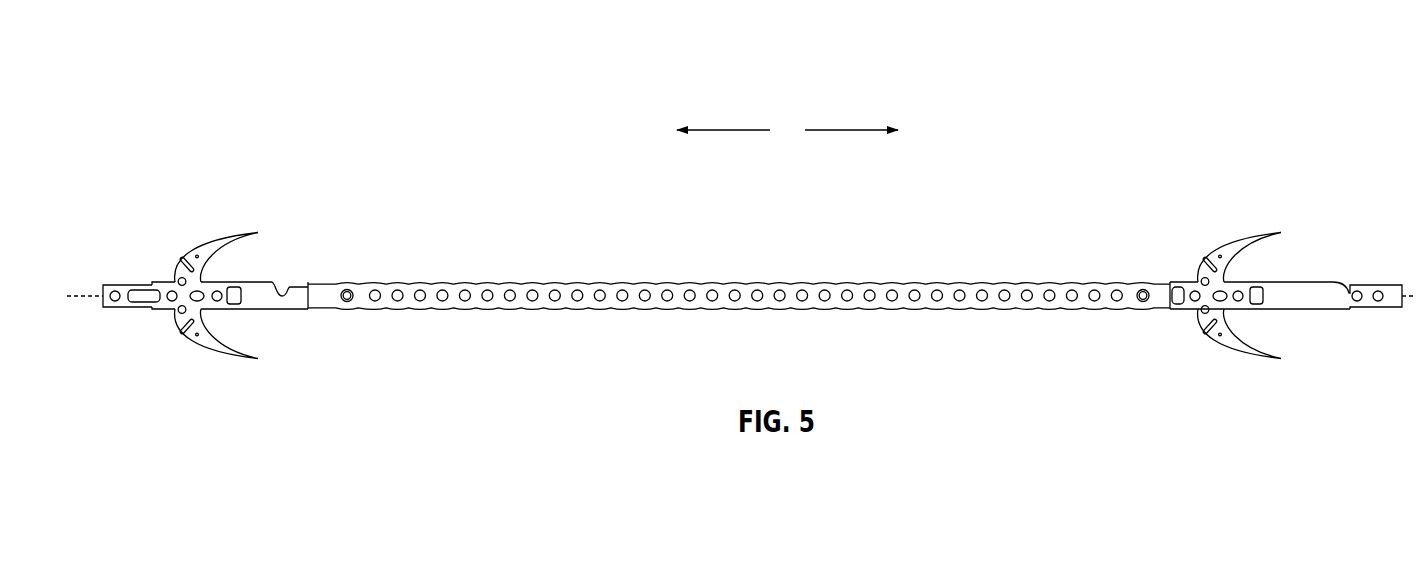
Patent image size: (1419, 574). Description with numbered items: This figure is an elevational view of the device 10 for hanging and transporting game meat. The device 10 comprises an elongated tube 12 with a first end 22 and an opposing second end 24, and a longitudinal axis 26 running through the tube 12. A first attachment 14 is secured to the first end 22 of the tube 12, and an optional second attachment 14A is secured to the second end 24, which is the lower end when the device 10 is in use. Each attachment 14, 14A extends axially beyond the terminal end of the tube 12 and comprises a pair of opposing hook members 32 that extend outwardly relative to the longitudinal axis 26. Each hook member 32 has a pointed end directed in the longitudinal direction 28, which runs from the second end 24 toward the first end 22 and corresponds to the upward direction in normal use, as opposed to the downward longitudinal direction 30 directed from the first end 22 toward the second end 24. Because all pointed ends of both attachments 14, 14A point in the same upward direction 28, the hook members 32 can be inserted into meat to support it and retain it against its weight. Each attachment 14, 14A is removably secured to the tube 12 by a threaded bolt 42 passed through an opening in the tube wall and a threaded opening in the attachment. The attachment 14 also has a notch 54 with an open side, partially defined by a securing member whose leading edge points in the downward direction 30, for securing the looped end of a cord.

The device for hanging and transporting meat 10 is at (154, 84).
The tube 12 is at (642, 282).
The attachment 14 is at (1310, 282).
The second attachment 14A is at (271, 310).
The first end of the tube 22 is at (1155, 274).
The second end of the tube 24 is at (322, 276).
The longitudinal axis of the tube 26 is at (87, 292).
The upward longitudinal direction 28 is at (835, 129).
The downward longitudinal direction 30 is at (728, 129).
The hook member 32 is at (232, 233).
The threaded bolt 42 is at (349, 290).
The notch 54 is at (282, 276).